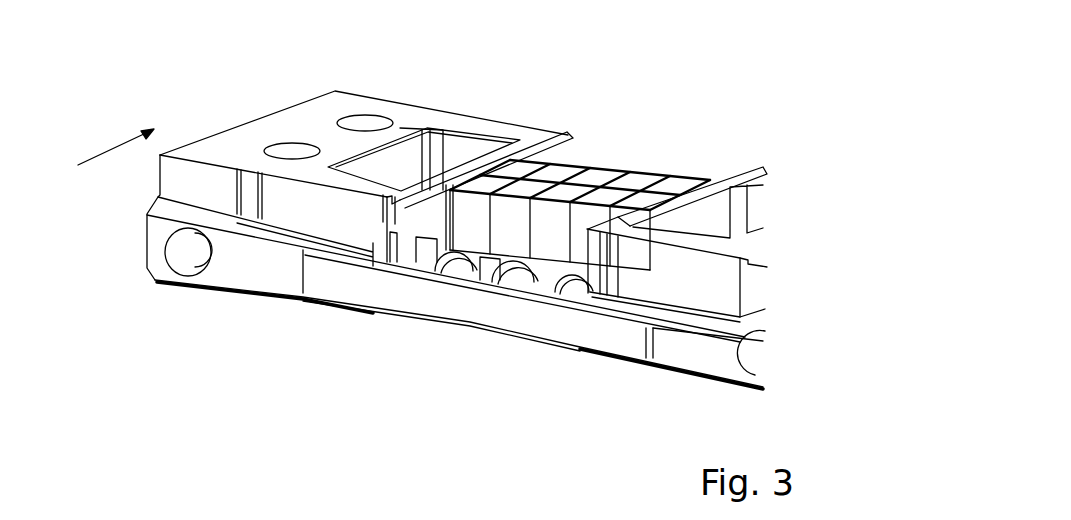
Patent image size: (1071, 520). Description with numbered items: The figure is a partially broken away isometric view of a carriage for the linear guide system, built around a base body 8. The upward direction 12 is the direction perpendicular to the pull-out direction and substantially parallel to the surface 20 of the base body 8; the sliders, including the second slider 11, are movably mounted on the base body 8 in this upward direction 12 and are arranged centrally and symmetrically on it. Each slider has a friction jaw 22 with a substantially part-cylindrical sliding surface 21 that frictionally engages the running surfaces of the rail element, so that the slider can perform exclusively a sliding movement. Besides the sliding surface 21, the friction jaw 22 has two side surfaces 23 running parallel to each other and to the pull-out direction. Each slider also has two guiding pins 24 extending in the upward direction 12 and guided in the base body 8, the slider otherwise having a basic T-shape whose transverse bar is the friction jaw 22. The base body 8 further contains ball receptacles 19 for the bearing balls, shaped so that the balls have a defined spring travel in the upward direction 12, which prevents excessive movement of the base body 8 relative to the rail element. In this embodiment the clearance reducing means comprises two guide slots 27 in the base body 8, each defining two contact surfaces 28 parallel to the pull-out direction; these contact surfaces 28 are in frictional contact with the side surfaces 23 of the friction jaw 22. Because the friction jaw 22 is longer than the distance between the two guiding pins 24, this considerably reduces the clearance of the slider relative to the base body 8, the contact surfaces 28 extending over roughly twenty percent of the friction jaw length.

The base body 8 is at (405, 108).
The second slider 11 is at (487, 313).
The upward direction 12 is at (110, 146).
The ball receptacle 19 is at (185, 266).
The surface of the base body 20 is at (295, 110).
The sliding surface 21 is at (370, 296).
The friction jaw 22 is at (433, 303).
The side surface 23 is at (468, 250).
The guiding pin 24 is at (566, 277).
The guide slot 27 is at (313, 287).
The contact surface 28 is at (367, 255).